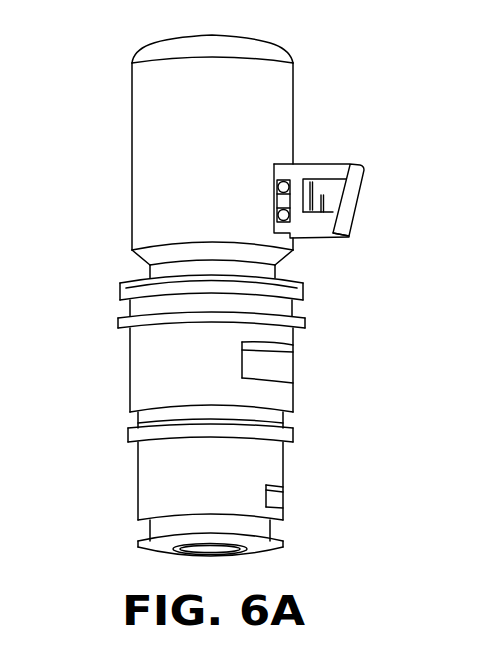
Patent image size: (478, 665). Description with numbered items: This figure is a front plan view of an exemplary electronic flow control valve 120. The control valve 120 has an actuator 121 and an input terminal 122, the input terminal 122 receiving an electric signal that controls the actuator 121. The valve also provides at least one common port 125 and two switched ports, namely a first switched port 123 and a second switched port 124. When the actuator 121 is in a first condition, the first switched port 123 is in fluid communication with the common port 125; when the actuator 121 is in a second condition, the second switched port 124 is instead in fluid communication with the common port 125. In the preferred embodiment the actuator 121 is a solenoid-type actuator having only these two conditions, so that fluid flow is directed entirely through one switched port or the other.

The control valve 120 is at (130, 39).
The actuator 121 is at (143, 165).
The input terminal 122 is at (331, 173).
The first switched port 123 is at (275, 373).
The second switched port 124 is at (273, 498).
The common port 125 is at (167, 550).